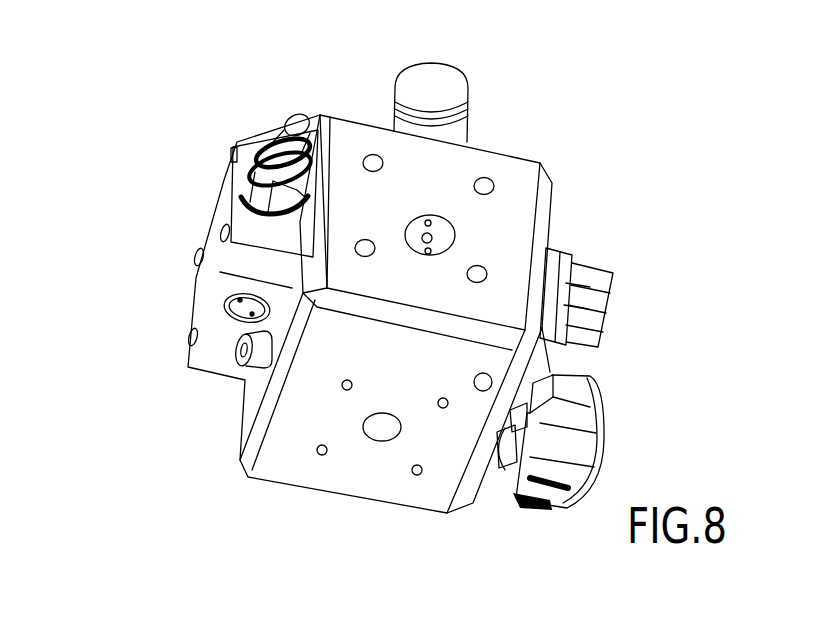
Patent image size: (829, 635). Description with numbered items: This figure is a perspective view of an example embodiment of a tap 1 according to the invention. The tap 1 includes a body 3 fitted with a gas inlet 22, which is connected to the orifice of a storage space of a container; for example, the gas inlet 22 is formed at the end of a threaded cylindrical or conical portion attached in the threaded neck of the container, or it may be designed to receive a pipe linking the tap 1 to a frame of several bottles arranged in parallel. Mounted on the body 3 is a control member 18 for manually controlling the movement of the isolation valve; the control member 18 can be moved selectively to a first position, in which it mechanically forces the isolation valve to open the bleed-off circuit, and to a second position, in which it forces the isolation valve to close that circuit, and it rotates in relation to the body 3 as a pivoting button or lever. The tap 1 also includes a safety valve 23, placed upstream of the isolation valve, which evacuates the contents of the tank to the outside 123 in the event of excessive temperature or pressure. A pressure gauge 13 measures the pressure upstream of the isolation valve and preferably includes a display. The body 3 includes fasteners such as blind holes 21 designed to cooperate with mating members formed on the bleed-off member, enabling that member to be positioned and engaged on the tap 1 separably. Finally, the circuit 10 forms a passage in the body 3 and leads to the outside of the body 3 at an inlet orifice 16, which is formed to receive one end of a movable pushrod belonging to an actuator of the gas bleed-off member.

The tap 1 is at (601, 89).
The body 3 is at (533, 197).
The circuit 10 is at (449, 58).
The pressure gauge 13 is at (612, 395).
The inlet orifice 16 is at (428, 220).
The control member 18 is at (624, 289).
The blind holes 21 is at (478, 270).
The gas inlet 22 is at (370, 428).
The safety valve 23 is at (365, 239).
The outside 123 is at (230, 305).